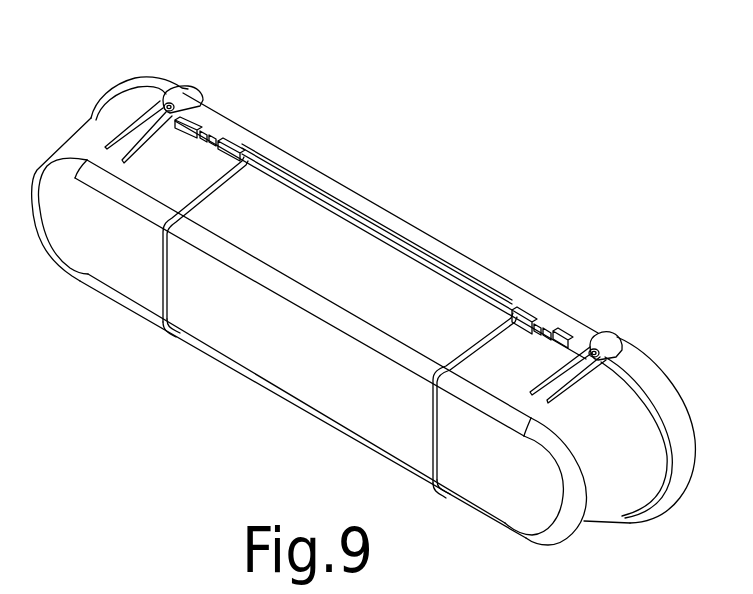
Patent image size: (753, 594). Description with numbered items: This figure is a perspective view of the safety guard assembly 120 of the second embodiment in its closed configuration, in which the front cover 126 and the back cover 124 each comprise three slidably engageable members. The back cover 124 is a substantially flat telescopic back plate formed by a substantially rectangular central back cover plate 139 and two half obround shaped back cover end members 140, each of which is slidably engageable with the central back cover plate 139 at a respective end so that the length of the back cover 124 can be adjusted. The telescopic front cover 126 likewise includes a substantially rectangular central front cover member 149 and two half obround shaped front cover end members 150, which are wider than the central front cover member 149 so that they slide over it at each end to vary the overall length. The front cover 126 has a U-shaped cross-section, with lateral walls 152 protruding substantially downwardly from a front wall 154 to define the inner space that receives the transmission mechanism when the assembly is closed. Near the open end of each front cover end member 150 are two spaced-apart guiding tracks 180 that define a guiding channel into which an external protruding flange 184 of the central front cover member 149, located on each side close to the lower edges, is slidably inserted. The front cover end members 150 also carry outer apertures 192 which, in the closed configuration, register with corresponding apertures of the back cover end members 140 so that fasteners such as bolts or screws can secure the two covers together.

The safety guard assembly 120 is at (107, 375).
The back cover 124 is at (468, 267).
The front cover 126 is at (248, 338).
The central back cover plate 139 is at (368, 205).
The back cover end members 140 is at (133, 78).
The central front cover member 149 is at (357, 396).
The front cover end members 150 is at (77, 230).
The lateral walls 152 is at (357, 266).
The front wall 154 is at (327, 366).
The guiding tracks 180 is at (203, 131).
The external protruding flanges 184 is at (214, 137).
The outer apertures 192 is at (172, 98).